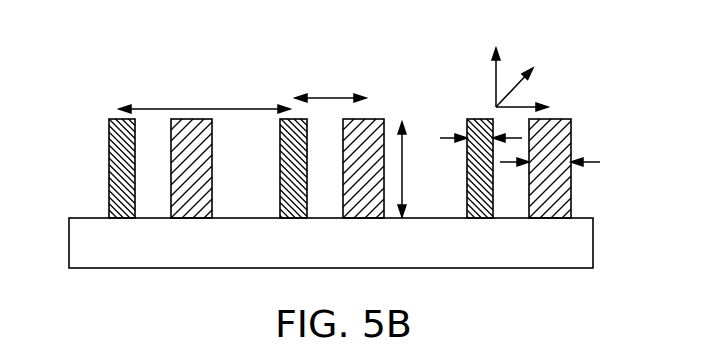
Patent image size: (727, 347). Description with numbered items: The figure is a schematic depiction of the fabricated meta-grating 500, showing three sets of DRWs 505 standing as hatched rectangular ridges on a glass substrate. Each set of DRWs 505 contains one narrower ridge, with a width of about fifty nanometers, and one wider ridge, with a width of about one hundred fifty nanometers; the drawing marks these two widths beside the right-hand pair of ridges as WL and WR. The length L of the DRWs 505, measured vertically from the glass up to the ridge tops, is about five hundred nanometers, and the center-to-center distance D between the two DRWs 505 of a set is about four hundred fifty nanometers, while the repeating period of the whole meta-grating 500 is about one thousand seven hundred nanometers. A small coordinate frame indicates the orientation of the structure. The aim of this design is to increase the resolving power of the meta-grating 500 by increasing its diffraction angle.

The meta-grating 500 is at (576, 38).
The DRW 505 is at (171, 205).
The center-to-center distance D is at (330, 85).
The length L is at (414, 169).
The left ridge width WL is at (470, 123).
The right ridge width WR is at (561, 148).